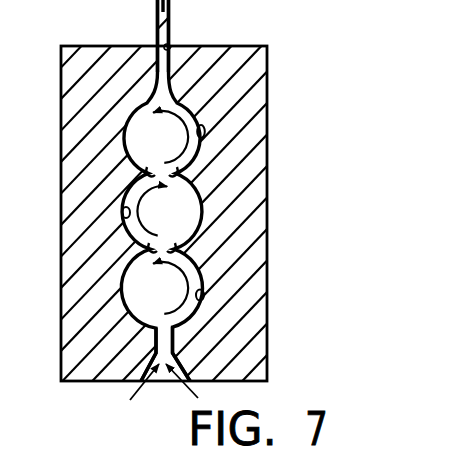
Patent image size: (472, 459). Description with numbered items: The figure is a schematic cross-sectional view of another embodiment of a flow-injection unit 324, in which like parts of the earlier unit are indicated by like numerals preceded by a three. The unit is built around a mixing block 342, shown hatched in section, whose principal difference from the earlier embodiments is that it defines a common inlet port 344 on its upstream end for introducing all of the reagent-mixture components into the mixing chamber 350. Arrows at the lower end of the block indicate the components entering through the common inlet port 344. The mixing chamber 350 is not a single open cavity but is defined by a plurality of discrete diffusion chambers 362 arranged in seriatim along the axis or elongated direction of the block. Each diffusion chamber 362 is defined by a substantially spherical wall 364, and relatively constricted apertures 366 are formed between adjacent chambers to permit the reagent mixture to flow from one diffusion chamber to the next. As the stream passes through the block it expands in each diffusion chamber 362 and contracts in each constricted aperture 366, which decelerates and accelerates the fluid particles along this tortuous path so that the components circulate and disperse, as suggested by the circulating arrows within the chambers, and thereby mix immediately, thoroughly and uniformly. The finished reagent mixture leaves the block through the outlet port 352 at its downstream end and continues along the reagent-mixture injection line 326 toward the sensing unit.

The flow-injection unit 324 is at (273, 68).
The reagent-mixture injection line 326 is at (156, 19).
The mixing block 342 is at (253, 158).
The common inlet port 344 is at (140, 372).
The mixing chamber 350 is at (210, 327).
The outlet port 352 is at (169, 44).
The diffusion chamber 362 is at (131, 148).
The substantially spherical wall 364 is at (204, 134).
The constricted aperture 366 is at (146, 171).